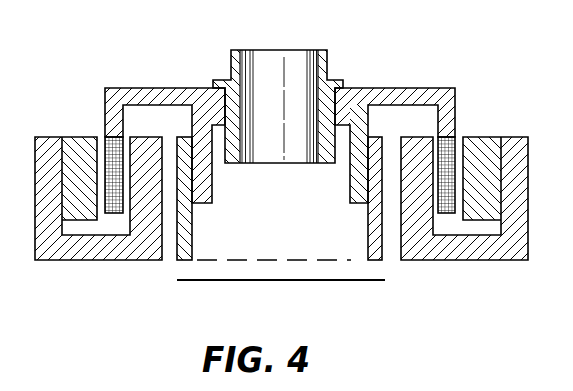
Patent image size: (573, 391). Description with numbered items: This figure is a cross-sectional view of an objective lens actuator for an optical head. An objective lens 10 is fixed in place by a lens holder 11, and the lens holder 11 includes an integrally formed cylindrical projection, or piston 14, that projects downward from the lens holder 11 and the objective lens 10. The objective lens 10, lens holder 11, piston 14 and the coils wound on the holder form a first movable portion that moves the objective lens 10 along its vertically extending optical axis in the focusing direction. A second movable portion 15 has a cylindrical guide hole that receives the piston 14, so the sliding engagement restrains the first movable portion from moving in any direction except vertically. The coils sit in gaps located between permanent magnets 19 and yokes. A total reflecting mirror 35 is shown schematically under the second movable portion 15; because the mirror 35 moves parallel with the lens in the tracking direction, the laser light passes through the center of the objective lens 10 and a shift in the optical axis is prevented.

The objective lens 10 is at (283, 57).
The lens holder 11 is at (358, 87).
The cylindrical projection (piston) 14 is at (211, 183).
The second movable portion 15 is at (383, 260).
The permanent magnet 19 is at (485, 140).
The total reflecting mirror 35 is at (177, 280).